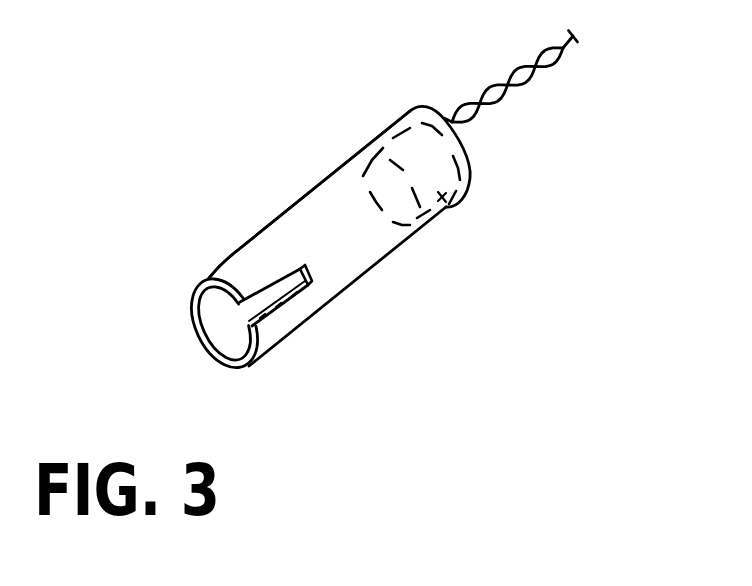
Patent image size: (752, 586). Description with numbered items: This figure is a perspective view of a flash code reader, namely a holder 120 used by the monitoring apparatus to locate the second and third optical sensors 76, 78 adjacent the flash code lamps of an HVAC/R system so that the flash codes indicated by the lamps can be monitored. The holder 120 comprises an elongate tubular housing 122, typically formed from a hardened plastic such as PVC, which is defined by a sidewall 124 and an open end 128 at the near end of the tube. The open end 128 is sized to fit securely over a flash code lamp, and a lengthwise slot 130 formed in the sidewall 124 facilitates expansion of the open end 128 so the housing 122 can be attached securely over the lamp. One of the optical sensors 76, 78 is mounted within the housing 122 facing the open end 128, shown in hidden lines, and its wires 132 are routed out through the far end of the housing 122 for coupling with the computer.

The holder 120 is at (350, 190).
The elongate tubular housing 122 is at (331, 201).
The sidewall 124 is at (242, 194).
The open end 128 is at (161, 334).
The lengthwise slot 130 is at (333, 313).
The second optical sensor 76 is at (469, 215).
The third optical sensor 78 is at (462, 268).
The wires 132 is at (536, 89).